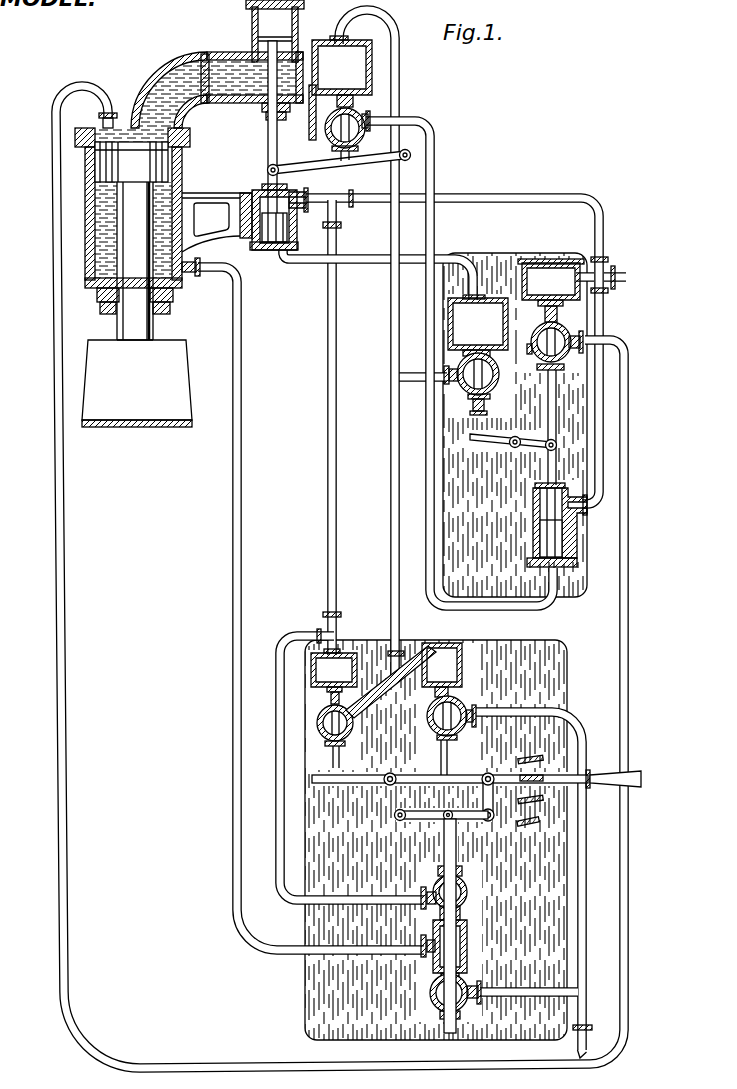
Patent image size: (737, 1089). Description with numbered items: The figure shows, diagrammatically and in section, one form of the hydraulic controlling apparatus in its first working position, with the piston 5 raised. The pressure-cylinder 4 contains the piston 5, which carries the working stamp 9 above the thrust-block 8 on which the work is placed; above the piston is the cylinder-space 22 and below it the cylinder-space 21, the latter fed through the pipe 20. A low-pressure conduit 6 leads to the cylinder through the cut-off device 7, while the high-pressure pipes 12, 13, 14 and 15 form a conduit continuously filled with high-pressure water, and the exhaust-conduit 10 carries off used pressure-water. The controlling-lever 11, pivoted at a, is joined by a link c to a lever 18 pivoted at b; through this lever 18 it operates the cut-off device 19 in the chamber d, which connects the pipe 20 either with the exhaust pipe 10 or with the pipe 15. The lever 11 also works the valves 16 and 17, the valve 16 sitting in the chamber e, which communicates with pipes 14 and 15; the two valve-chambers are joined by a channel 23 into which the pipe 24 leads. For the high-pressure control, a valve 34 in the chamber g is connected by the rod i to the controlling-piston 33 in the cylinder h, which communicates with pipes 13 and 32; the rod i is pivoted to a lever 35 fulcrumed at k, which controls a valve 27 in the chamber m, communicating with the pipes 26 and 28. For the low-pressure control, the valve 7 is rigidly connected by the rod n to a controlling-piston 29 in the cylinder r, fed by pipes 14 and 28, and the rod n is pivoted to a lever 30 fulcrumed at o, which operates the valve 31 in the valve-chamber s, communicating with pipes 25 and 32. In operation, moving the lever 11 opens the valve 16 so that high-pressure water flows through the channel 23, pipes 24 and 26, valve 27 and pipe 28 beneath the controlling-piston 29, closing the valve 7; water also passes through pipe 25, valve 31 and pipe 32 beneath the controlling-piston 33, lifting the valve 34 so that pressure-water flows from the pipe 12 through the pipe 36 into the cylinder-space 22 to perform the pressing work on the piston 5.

The pressure-cylinder 4 is at (190, 152).
The piston 5 is at (131, 162).
The low-pressure conduit 6 is at (246, 20).
The cut-off device 7 is at (293, 46).
The thrust-block 8 is at (118, 417).
The working stamp 9 is at (133, 222).
The exhaust-conduit 10 is at (584, 860).
The controlling-lever 11 is at (612, 782).
The high-pressure pipe 12 is at (603, 257).
The high-pressure pipe 13 is at (623, 272).
The high-pressure pipe 14 is at (490, 193).
The high-pressure pipe 15 is at (297, 632).
The valve 16 is at (334, 676).
The valve 17 is at (449, 706).
The lever 18 is at (424, 820).
The cut-off device 19 is at (450, 860).
The pipe 20 is at (236, 349).
The cylinder-space 21 is at (88, 228).
The cylinder-space 22 is at (128, 130).
The channel 23 is at (387, 695).
The pipe 24 is at (390, 402).
The pipe 25 is at (403, 58).
The pipe 26 is at (430, 382).
The valve 27 is at (476, 355).
The pipe 28 is at (357, 259).
The controlling-piston 29 is at (272, 251).
The lever 30 is at (333, 170).
The valve 31 is at (340, 88).
The pipe 32 is at (434, 232).
The controlling-piston 33 is at (565, 538).
The valve 34 is at (552, 316).
The lever 35 is at (497, 445).
The pipe 36 is at (62, 477).
The rod n is at (268, 131).
The cylinder r is at (285, 238).
The valve-chamber s is at (369, 60).
The fulcrum o is at (411, 153).
The chamber g is at (552, 262).
The chamber m is at (498, 370).
The rod i is at (556, 402).
The fulcrum k is at (516, 437).
The cylinder h is at (533, 565).
The chamber e is at (319, 716).
The pivot a is at (386, 785).
The pivot b is at (388, 833).
The link c is at (492, 808).
The chamber d is at (468, 900).